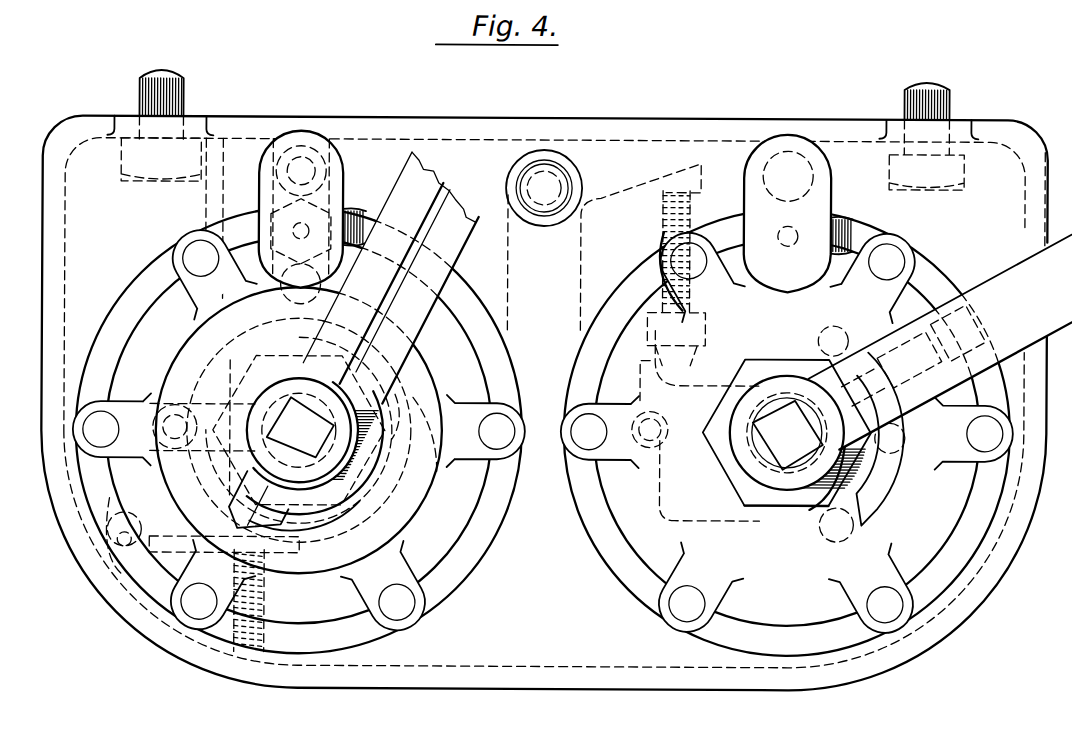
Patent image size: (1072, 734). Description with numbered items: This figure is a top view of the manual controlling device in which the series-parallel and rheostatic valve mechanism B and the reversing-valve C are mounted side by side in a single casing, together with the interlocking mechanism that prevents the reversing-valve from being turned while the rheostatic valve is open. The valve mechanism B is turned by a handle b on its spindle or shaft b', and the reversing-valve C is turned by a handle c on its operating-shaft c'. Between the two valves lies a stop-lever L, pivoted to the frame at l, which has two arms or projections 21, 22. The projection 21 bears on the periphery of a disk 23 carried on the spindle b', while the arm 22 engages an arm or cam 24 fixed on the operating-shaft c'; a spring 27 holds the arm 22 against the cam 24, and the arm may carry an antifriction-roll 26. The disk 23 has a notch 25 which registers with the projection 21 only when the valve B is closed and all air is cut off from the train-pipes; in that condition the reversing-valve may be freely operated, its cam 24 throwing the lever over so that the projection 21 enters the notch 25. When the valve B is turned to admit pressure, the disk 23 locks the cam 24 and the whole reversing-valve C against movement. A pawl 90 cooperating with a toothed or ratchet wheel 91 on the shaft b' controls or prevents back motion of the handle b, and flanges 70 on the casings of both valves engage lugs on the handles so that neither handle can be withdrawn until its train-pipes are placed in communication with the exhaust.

The lever L is at (555, 248).
The pivot l is at (544, 188).
The valve mechanism B is at (299, 392).
The reversing-valve C is at (787, 395).
The handle b is at (356, 356).
The spindle or shaft b' is at (298, 430).
The handle c is at (933, 371).
The operating-shaft c' is at (786, 432).
The arm or projection 21 is at (437, 455).
The arm or projection 22 is at (605, 470).
The disk 23 is at (378, 498).
The arm or cam 24 is at (690, 500).
The notch 25 is at (395, 405).
The antifriction-roll 26 is at (650, 405).
The spring 27 is at (660, 246).
The flange 70 is at (902, 414).
The pawl 90 is at (285, 562).
The toothed or ratchet wheel 91 is at (318, 540).